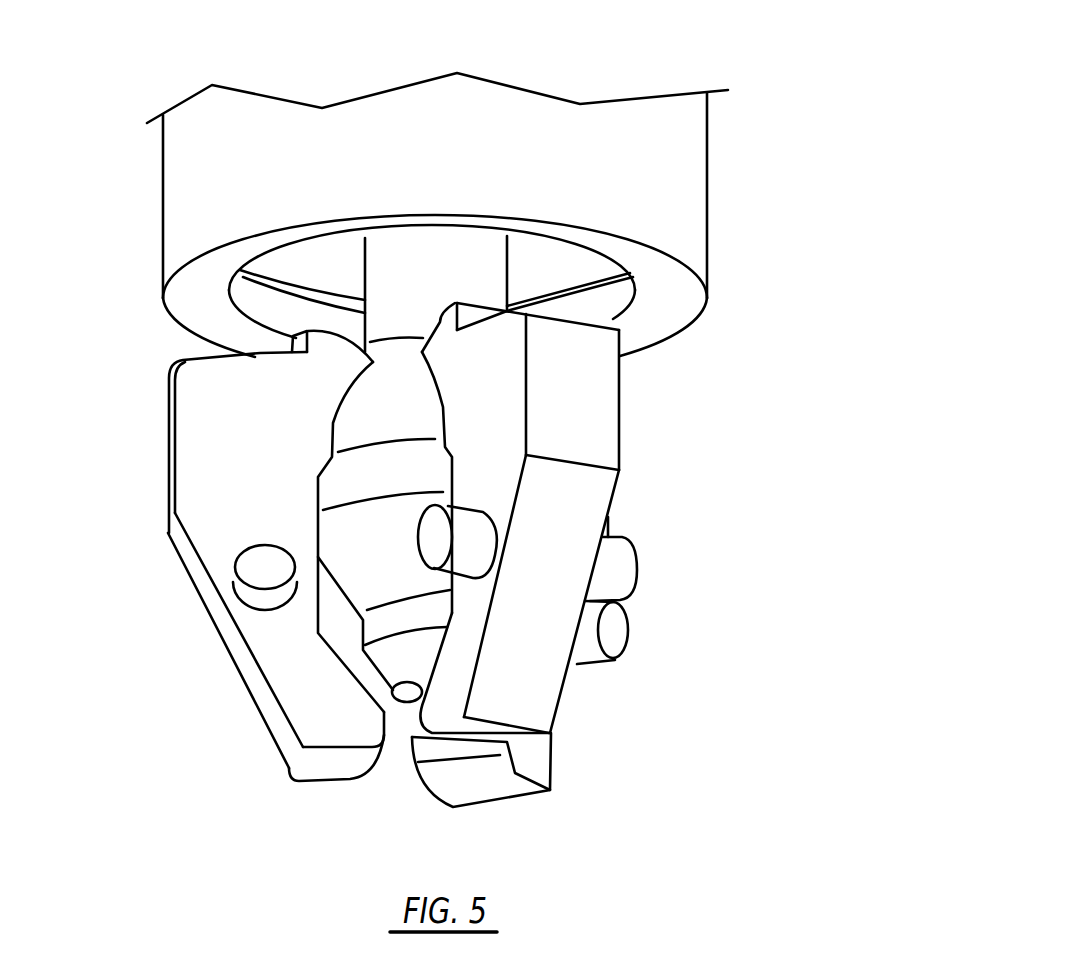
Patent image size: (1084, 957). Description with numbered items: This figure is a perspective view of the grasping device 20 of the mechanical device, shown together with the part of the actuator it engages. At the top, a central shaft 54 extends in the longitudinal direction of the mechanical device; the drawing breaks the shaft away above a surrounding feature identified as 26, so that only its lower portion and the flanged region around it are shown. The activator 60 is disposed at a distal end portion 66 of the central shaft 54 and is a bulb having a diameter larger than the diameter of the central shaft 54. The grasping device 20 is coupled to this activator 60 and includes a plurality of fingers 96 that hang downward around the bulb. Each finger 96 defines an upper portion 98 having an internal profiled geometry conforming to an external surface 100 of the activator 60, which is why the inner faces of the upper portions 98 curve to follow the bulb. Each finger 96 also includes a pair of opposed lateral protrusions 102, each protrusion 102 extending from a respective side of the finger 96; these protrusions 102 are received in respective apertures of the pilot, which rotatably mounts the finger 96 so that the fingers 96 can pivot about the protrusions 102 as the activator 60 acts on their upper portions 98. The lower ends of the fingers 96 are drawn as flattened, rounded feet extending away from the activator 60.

The grasping device 20 is at (222, 705).
The cylindrical body 26 is at (657, 140).
The central shaft 54 is at (390, 281).
The activator 60 is at (370, 535).
The distal end portion 66 is at (453, 270).
The fingers 96 is at (217, 436).
The upper portion 98 is at (243, 390).
The external surface 100 is at (397, 423).
The lateral protrusions 102 is at (250, 571).